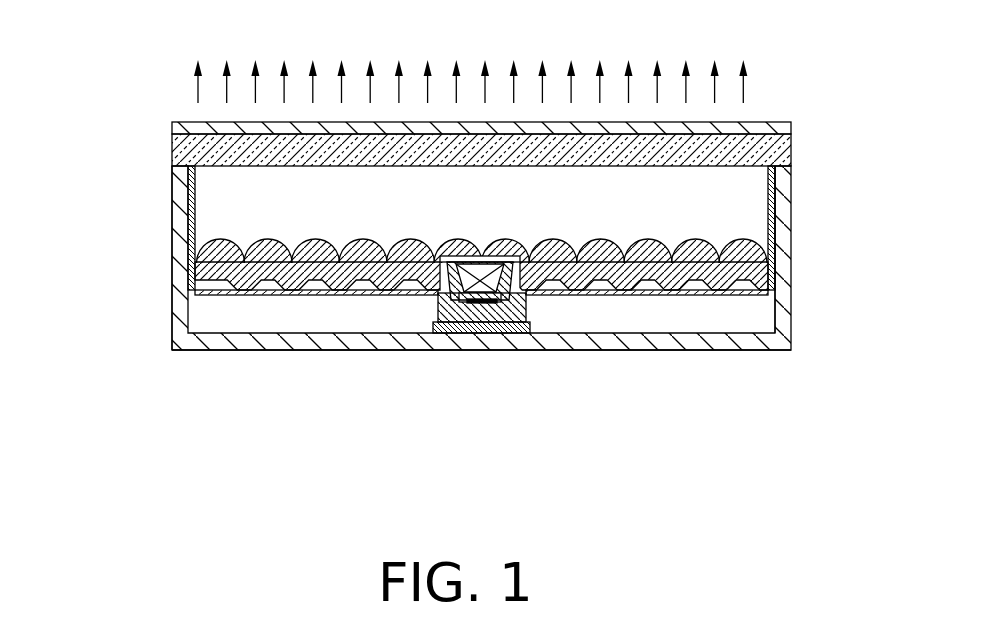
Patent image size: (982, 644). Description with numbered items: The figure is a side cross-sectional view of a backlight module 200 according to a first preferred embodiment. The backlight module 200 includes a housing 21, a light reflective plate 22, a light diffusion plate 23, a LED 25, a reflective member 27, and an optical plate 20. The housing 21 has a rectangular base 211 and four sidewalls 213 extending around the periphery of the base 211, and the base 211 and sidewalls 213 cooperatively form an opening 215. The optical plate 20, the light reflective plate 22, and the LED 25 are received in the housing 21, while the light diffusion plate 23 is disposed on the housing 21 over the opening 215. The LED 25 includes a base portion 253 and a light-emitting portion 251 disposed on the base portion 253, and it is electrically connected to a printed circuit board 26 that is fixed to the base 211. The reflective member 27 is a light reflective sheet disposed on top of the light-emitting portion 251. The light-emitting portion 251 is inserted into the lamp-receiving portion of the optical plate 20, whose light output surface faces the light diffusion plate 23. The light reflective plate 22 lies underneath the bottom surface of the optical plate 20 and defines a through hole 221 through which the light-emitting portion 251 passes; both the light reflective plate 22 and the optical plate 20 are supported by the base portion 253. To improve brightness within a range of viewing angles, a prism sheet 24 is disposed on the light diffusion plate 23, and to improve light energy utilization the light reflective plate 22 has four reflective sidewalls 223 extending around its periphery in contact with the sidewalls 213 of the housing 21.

The backlight module 200 is at (147, 85).
The optical plate 20 is at (768, 270).
The housing 21 is at (75, 218).
The base 211 is at (220, 345).
The sidewalls 213 is at (181, 230).
The opening 215 is at (758, 192).
The light reflective plate 22 is at (738, 293).
The through hole 221 is at (525, 296).
The reflective sidewalls 223 is at (775, 236).
The light diffusion plate 23 is at (786, 150).
The prism sheet 24 is at (756, 128).
The LED 25 is at (419, 372).
The light-emitting portion 251 is at (445, 273).
The base portion 253 is at (445, 323).
The printed circuit board 26 is at (496, 330).
The reflective member 27 is at (476, 257).